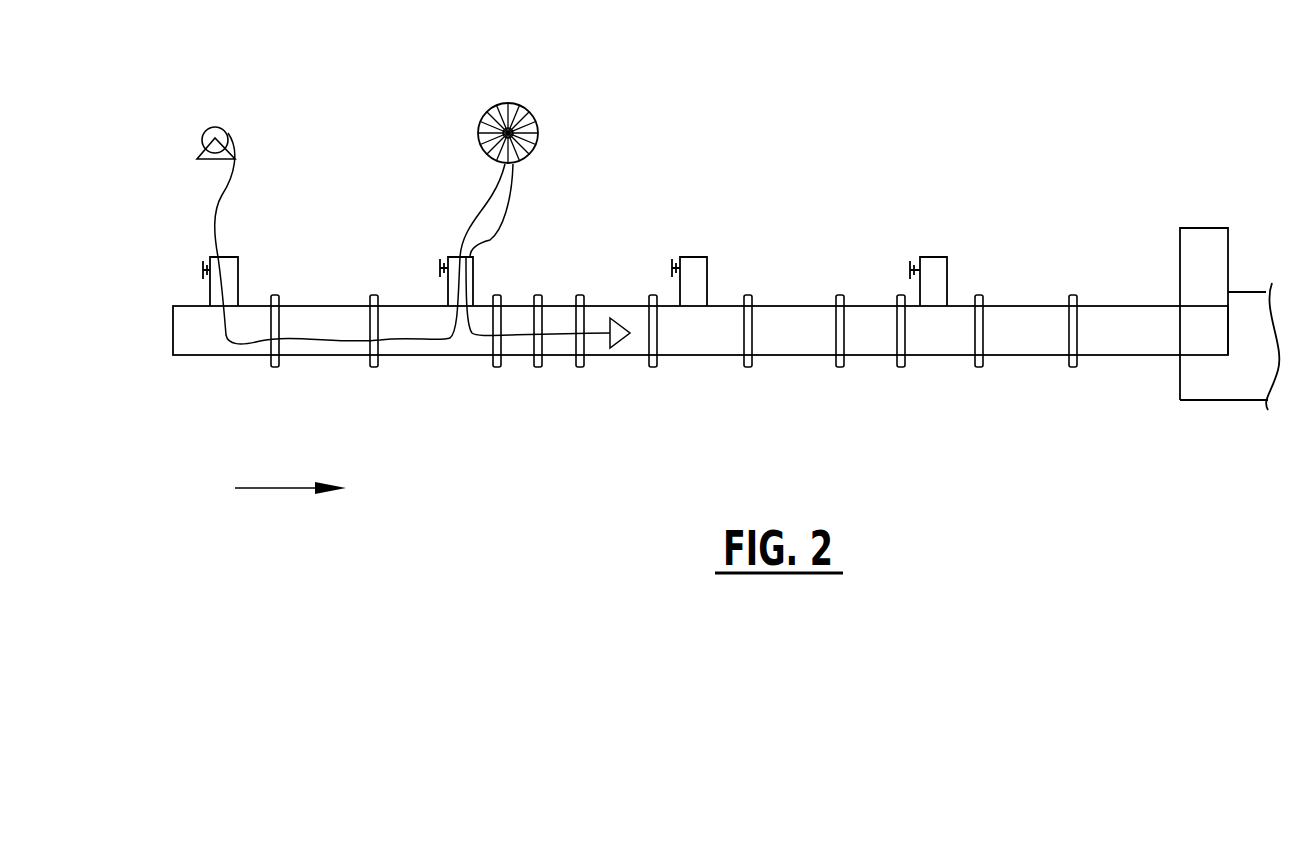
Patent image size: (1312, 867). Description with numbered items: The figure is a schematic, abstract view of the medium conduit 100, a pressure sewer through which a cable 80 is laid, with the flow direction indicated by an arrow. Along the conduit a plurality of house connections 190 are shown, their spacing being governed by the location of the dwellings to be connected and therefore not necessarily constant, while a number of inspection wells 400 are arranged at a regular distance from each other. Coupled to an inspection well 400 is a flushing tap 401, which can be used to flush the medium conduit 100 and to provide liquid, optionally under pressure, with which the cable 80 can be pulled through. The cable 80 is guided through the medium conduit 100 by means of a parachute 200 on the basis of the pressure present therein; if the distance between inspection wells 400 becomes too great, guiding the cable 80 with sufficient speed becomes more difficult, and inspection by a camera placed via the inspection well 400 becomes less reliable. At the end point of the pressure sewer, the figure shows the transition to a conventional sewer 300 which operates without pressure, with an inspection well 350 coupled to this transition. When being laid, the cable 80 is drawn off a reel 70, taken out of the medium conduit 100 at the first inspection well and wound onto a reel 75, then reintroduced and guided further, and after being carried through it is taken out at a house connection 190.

The medium conduit 100 is at (170, 172).
The reel 70 is at (219, 127).
The reel 75 is at (526, 110).
The cable 80 is at (321, 337).
The house connections 190 is at (275, 368).
The parachute 200 is at (617, 346).
The conventional sewer 300 is at (1247, 297).
The inspection well 350 is at (1203, 240).
The inspection wells 400 is at (226, 257).
The flushing tap 401 is at (200, 269).